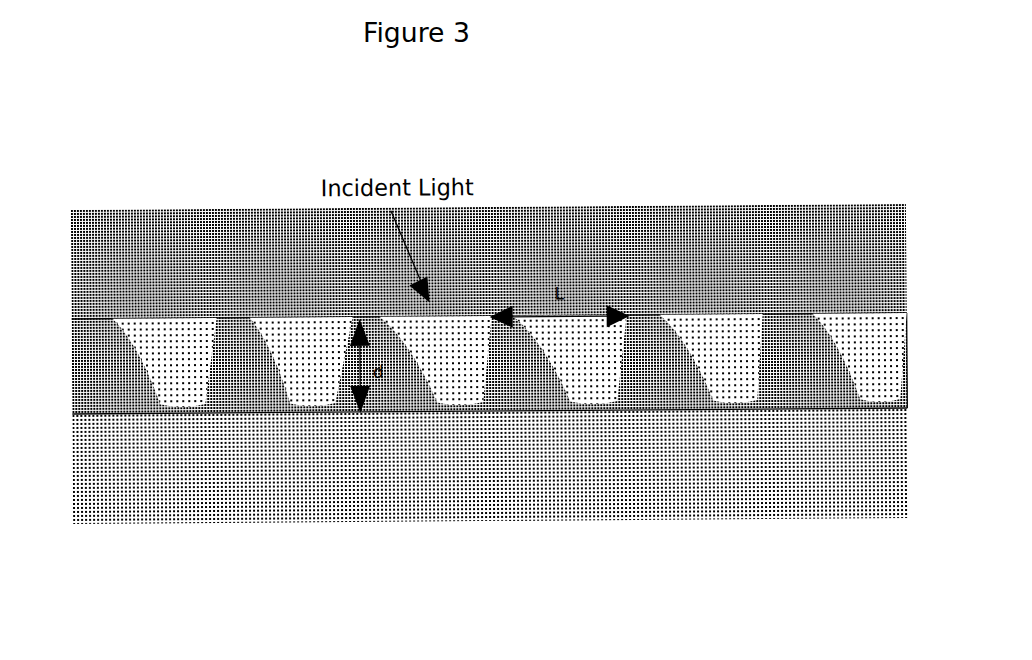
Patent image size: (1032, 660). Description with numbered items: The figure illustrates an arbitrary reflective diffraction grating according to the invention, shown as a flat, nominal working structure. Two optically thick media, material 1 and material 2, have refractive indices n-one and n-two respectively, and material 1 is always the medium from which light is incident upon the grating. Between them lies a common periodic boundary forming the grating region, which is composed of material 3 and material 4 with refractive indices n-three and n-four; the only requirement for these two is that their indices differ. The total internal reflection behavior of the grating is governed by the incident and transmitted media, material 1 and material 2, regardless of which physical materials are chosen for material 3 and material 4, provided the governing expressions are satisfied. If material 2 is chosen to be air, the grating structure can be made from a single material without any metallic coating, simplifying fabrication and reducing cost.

The material 1 is at (777, 225).
The material 2 is at (548, 485).
The material 3 is at (815, 400).
The material 4 is at (318, 355).